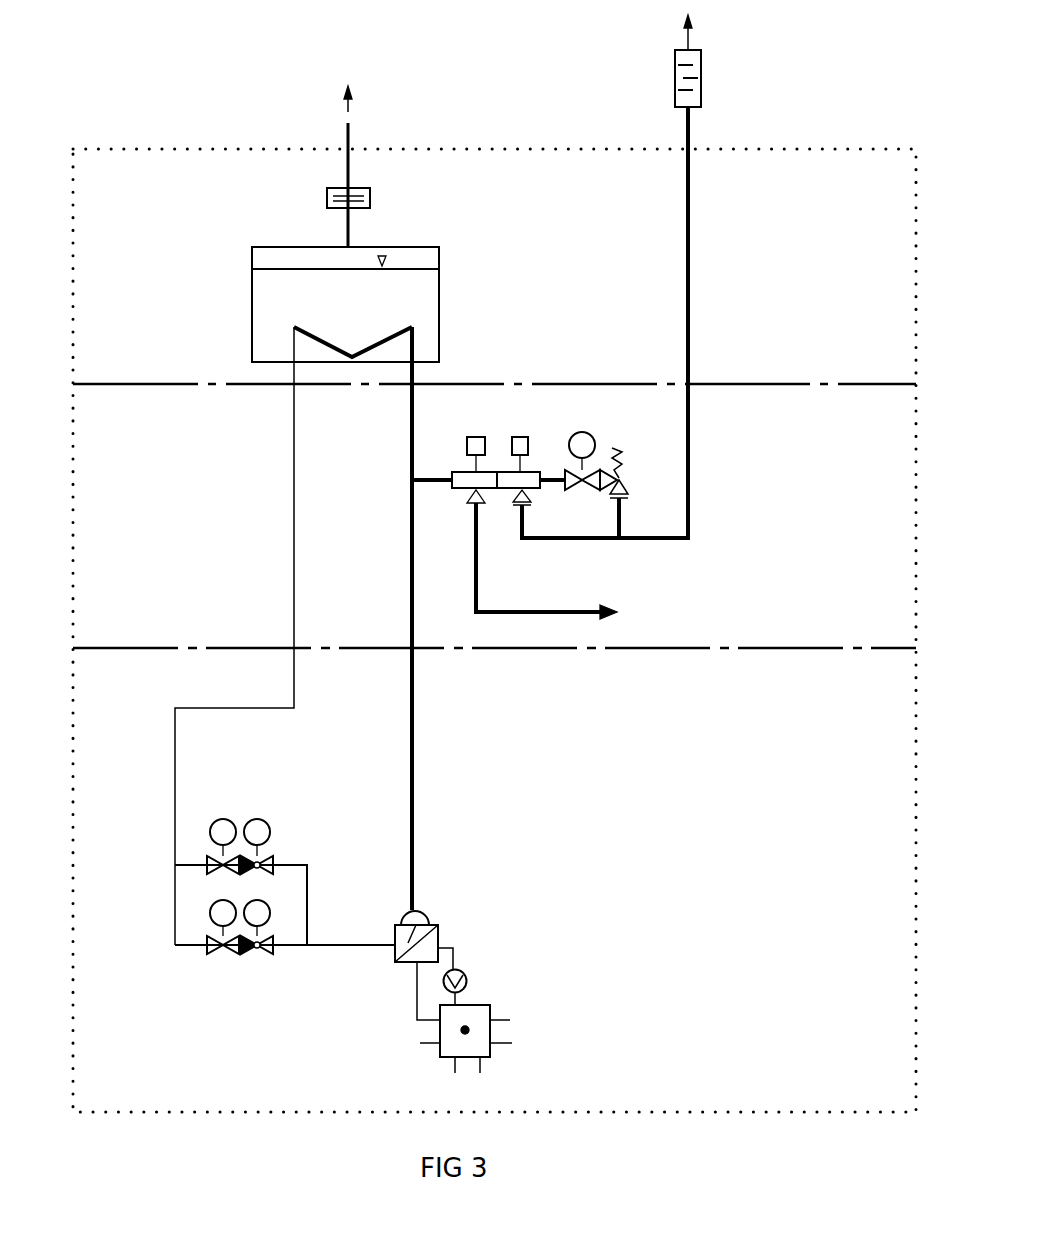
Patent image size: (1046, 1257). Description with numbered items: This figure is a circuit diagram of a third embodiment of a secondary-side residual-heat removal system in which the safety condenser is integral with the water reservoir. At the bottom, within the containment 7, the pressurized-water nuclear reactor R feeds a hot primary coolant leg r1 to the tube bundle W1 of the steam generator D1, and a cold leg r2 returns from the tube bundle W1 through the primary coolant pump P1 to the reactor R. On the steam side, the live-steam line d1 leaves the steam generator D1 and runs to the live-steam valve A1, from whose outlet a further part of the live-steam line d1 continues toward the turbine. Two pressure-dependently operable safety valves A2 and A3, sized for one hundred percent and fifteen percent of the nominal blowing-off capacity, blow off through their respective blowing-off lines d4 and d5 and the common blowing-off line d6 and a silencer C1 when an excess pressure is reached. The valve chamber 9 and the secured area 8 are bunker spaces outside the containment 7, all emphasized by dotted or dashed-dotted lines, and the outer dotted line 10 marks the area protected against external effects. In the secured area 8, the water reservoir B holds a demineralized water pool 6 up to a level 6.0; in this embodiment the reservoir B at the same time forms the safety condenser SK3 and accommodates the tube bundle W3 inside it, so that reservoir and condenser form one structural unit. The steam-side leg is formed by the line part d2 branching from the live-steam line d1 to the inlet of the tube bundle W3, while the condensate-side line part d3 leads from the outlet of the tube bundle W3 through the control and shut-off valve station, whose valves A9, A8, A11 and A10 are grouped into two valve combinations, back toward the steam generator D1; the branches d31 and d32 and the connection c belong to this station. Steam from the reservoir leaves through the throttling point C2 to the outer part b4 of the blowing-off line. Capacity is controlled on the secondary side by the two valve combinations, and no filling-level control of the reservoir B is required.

The outer dotted line 10 is at (463, 148).
The secured area 8 is at (777, 319).
The valve chamber 9 is at (806, 578).
The containment 7 is at (783, 792).
The silencer C1 is at (701, 90).
The throttling point C2 is at (370, 202).
The outer part of the blowing-off line b4 is at (345, 226).
The water reservoir B is at (440, 290).
The level 6.0 is at (382, 256).
The demineralized water pool 6 is at (270, 298).
The safety condenser SK3 is at (243, 362).
The tube bundle W3 is at (323, 338).
The line part d3 is at (293, 509).
The live-steam line d1 is at (431, 478).
The line part d2 is at (409, 441).
The blowing-off line d4 is at (541, 537).
The blowing-off line d5 is at (647, 536).
The common blowing-off line d6 is at (690, 466).
The live-steam valve A1 is at (473, 436).
The safety valve A2 is at (511, 437).
The safety valve A3 is at (612, 447).
The line d31 is at (307, 865).
The connection c is at (334, 866).
The line d32 is at (192, 948).
The control and shut-off valve A9 is at (207, 858).
The control and shut-off valve A8 is at (273, 858).
The control and shut-off valve A11 is at (207, 950).
The control and shut-off valve A10 is at (250, 950).
The tube bundle W1 is at (397, 924).
The steam generator D1 is at (433, 921).
The primary coolant pump P1 is at (467, 974).
The hot primary coolant leg r1 is at (416, 1006).
The cold leg r2 is at (456, 1003).
The nuclear reactor R is at (530, 1087).